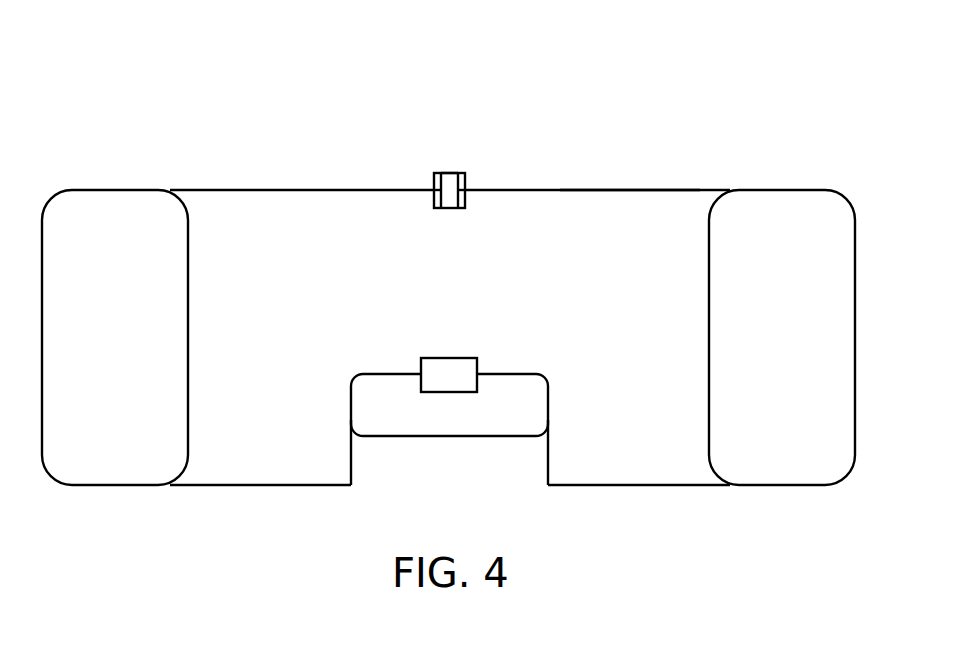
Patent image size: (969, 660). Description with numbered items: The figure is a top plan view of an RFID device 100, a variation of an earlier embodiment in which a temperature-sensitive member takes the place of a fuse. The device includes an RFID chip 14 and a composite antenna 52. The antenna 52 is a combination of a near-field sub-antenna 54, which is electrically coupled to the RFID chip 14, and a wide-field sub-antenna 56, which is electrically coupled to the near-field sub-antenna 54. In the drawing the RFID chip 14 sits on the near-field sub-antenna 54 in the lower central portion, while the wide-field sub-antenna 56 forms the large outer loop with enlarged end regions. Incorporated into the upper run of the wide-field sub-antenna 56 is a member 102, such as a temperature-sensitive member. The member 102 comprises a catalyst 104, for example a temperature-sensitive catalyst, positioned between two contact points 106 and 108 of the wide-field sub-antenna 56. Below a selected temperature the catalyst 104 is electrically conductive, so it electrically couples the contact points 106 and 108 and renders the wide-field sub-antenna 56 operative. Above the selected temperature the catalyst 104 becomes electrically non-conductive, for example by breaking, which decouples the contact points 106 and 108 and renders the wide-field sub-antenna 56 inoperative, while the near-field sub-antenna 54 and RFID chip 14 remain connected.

The RFID device 100 is at (448, 269).
The antenna 52 is at (450, 284).
The wide-field sub-antenna 56 is at (620, 190).
The near-field sub-antenna 54 is at (448, 437).
The RFID chip 14 is at (450, 358).
The member 102 is at (450, 131).
The catalyst 104 is at (448, 176).
The contact point 106 is at (433, 176).
The contact point 108 is at (466, 176).